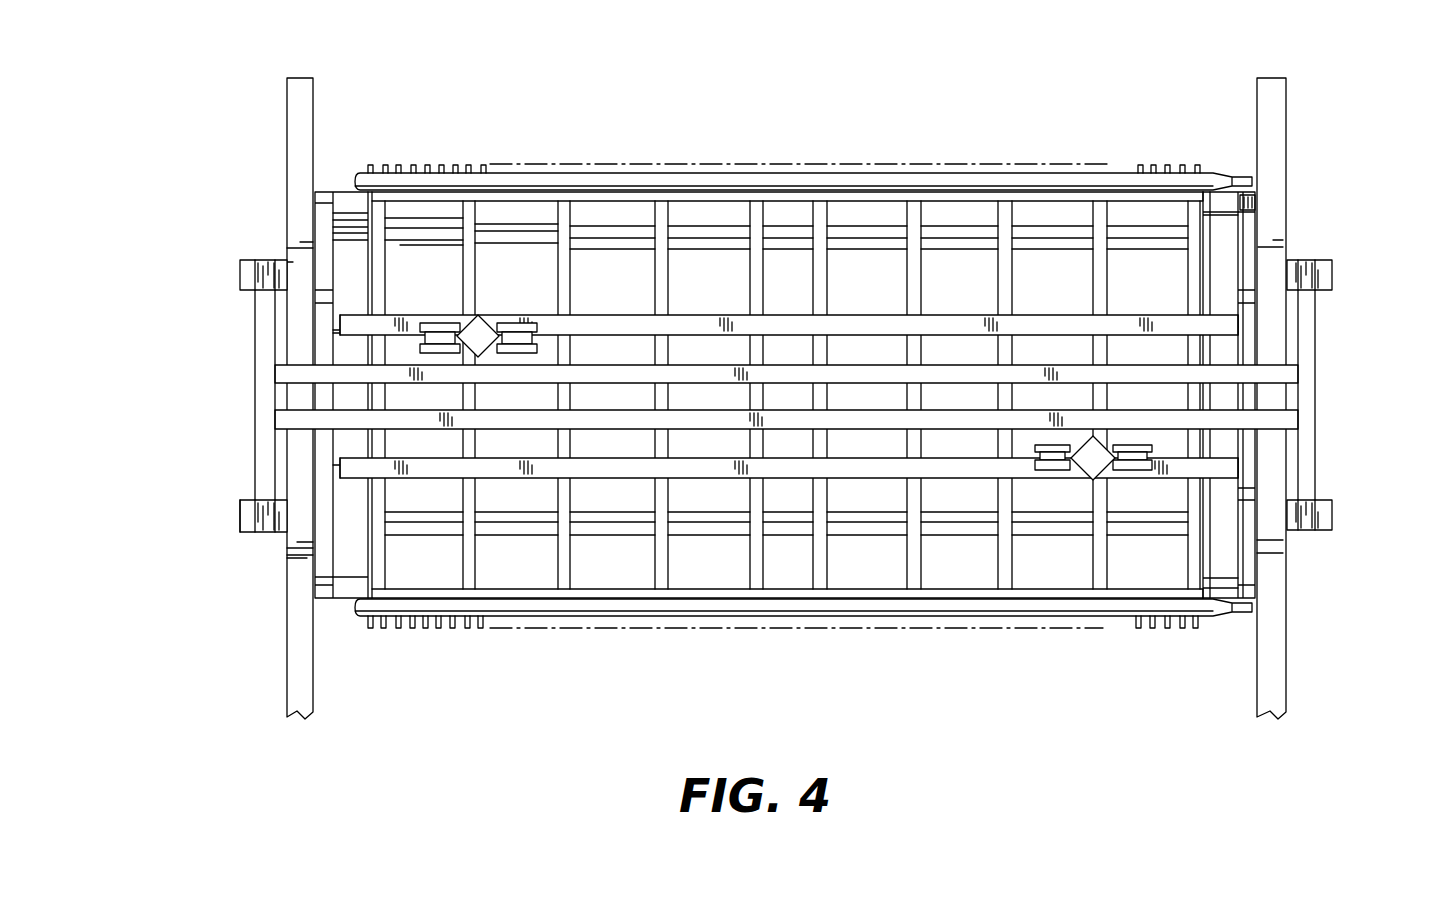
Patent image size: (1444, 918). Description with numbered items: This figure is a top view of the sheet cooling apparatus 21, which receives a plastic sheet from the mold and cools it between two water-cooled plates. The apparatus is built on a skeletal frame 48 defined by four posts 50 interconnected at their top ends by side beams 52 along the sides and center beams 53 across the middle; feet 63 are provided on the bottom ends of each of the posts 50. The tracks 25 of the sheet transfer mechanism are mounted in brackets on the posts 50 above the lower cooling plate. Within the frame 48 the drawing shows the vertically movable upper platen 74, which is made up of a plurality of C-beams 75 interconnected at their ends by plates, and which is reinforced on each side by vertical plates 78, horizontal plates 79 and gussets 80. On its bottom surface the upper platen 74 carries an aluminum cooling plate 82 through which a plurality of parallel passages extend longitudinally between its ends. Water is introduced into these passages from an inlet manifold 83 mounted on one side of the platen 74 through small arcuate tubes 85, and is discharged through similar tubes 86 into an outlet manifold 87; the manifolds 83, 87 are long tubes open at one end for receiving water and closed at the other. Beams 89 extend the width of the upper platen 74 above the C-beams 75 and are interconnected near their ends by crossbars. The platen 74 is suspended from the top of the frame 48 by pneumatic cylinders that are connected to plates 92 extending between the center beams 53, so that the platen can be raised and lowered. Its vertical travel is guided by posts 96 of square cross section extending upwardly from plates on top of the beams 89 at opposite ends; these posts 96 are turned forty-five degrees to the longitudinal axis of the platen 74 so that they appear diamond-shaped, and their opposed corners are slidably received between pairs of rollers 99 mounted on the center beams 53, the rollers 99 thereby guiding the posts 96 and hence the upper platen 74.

The sheet cooling apparatus 21 is at (948, 114).
The tracks 25 is at (305, 88).
The skeletal frame 48 is at (242, 503).
The posts 50 is at (276, 260).
The side beams 52 is at (262, 417).
The center beams 53 is at (1283, 418).
The feet 63 is at (243, 272).
The upper platen 74 is at (937, 592).
The C-beams 75 is at (656, 218).
The vertical plates 78 is at (365, 553).
The horizontal plates 79 is at (348, 565).
The gussets 80 is at (340, 325).
The aluminum cooling plate 82 is at (727, 303).
The inlet manifold 83 is at (712, 608).
The tubes 85 is at (383, 628).
The tubes 86 is at (481, 160).
The outlet manifold 87 is at (700, 182).
The beams 89 is at (888, 325).
The plates 92 is at (562, 395).
The posts 96 is at (478, 322).
The rollers 99 is at (440, 325).